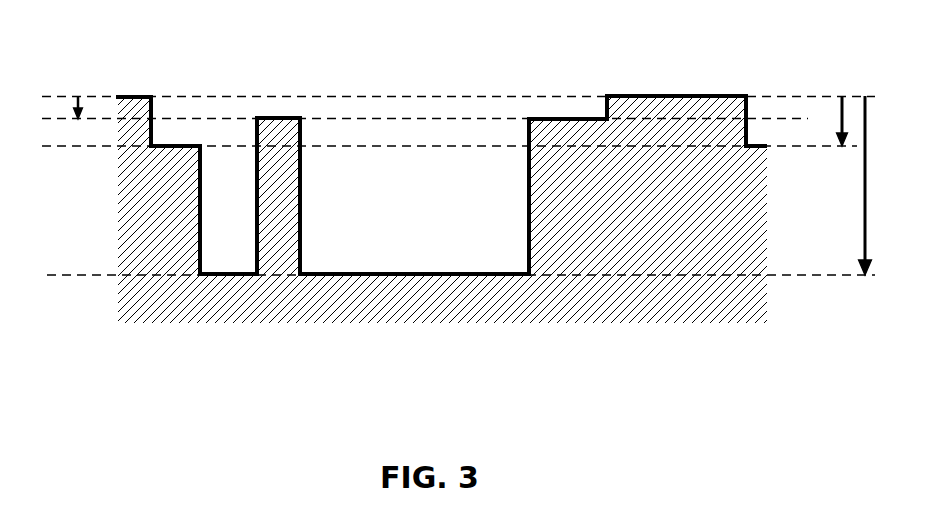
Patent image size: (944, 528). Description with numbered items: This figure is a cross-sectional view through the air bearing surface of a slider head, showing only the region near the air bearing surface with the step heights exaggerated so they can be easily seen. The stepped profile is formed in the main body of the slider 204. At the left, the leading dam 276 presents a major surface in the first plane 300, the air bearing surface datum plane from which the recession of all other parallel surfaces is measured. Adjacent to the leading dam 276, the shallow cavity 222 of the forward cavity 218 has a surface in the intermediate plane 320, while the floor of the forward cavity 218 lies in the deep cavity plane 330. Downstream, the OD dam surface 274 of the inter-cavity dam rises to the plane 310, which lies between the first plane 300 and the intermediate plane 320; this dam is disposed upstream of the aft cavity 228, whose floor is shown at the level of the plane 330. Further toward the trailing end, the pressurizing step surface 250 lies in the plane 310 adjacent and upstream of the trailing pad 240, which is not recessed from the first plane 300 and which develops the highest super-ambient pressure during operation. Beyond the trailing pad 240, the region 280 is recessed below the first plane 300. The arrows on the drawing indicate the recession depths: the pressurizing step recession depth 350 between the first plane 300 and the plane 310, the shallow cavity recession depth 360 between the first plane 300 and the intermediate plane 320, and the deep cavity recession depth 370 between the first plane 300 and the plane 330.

The slider 204 is at (607, 298).
The forward cavity 218 is at (228, 216).
The shallow cavity 222 is at (174, 142).
The aft cavity 228 is at (414, 217).
The trailing pad 240 is at (675, 108).
The pressurizing step surface 250 is at (557, 118).
The OD dam surface 274 is at (280, 117).
The leading dam 276 is at (135, 109).
The region 280 is at (762, 143).
The first plane 300 is at (828, 96).
The plane 310 is at (782, 117).
The intermediate plane 320 is at (48, 148).
The plane 330 is at (50, 277).
The pressurizing step recession depth 350 is at (88, 108).
The shallow cavity recession depth 360 is at (833, 123).
The deep cavity recession depth 370 is at (862, 183).